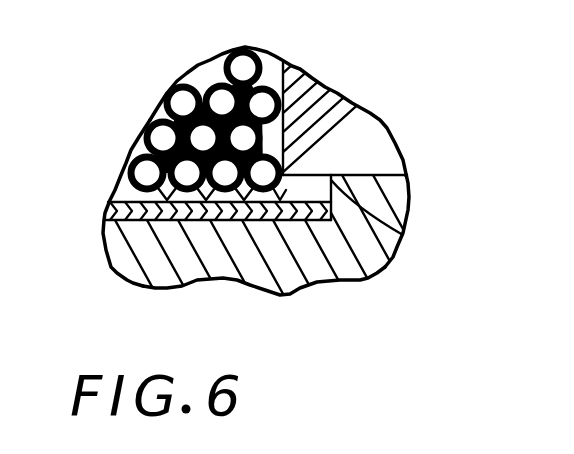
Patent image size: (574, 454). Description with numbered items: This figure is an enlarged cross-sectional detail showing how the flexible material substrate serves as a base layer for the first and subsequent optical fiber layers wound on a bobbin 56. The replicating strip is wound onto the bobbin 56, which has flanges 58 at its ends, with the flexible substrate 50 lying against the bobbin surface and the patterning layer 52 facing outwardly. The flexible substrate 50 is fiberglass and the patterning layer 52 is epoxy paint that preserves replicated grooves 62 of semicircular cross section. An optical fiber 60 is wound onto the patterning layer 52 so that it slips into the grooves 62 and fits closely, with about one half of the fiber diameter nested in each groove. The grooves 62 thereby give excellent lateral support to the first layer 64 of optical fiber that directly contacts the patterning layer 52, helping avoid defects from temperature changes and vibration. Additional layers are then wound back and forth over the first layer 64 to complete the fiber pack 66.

The flexible substrate 50 is at (402, 236).
The patterning layer 52 is at (410, 193).
The bobbin 56 is at (300, 278).
The flanges 58 is at (372, 123).
The optical fiber 60 is at (148, 134).
The grooves 62 is at (126, 237).
The first layer of optical fiber 64 is at (117, 157).
The fiber pack 66 is at (144, 90).